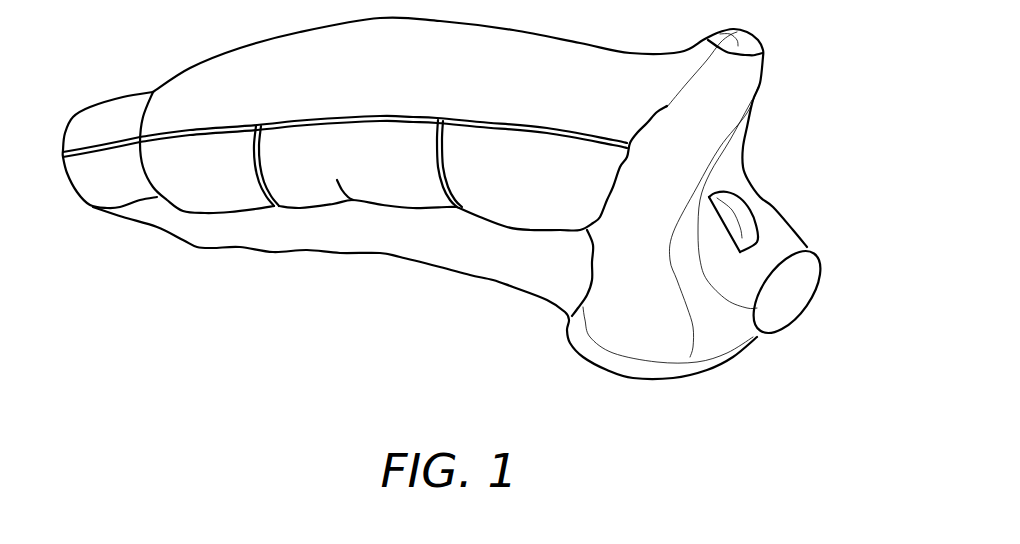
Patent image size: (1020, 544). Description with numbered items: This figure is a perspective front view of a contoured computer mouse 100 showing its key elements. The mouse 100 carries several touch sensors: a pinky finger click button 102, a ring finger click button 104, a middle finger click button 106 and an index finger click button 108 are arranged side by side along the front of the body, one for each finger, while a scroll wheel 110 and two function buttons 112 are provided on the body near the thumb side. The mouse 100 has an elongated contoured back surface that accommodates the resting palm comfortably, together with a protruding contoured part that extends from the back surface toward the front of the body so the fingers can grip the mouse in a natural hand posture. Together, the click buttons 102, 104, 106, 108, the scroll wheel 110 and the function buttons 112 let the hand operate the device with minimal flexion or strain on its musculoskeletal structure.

The contoured mouse 100 is at (152, 420).
The pinky finger click button 102 is at (108, 197).
The ring finger click button 104 is at (210, 196).
The middle finger click button 106 is at (374, 188).
The index finger click button 108 is at (524, 214).
The scroll wheel 110 is at (738, 233).
The two function buttons 112 is at (755, 49).